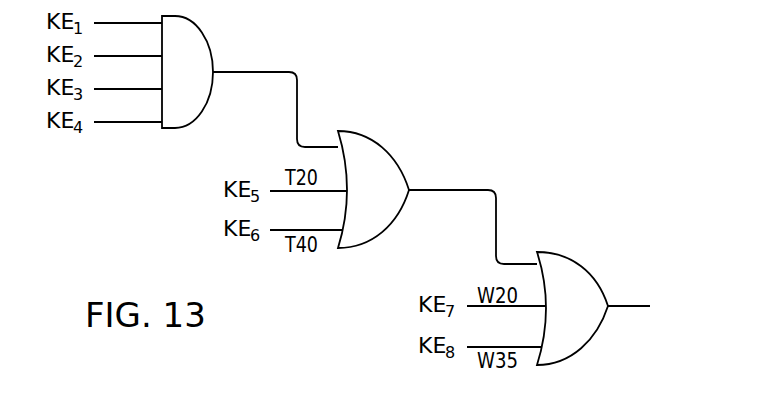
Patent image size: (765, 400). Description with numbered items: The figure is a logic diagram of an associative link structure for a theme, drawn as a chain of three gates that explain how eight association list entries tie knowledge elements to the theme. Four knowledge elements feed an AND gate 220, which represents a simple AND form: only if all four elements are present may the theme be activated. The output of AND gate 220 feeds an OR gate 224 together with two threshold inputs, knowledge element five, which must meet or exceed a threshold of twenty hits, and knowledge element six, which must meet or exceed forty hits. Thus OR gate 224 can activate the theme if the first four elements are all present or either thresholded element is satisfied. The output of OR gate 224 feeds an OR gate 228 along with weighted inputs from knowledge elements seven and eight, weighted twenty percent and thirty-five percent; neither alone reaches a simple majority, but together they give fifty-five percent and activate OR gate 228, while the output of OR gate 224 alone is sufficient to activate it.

The AND gate 220 is at (205, 37).
The OR gate 224 is at (389, 157).
The OR gate 228 is at (588, 272).